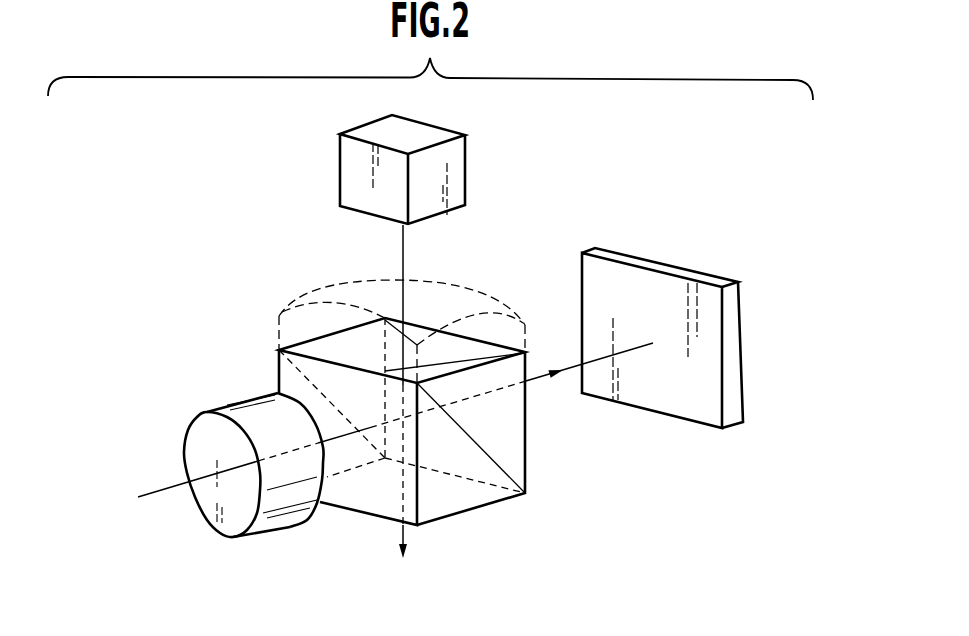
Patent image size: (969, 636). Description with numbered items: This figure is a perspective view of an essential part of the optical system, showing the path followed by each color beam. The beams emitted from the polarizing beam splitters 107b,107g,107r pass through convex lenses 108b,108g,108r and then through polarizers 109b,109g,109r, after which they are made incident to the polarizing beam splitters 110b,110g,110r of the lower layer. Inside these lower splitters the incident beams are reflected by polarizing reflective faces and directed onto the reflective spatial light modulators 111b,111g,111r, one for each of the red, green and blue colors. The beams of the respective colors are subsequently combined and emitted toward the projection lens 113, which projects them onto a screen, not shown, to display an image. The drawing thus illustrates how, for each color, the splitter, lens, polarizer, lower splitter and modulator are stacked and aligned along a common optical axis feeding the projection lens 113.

The polarizing beam splitters 107b,107g,107r is at (467, 164).
The convex lenses 108b,108g,108r is at (361, 291).
The polarizers 109b,109g,109r is at (283, 355).
The polarizing beam splitters of the lower layer 110b,110g,110r is at (465, 493).
The reflective spatial light modulators 111b,111g,111r is at (665, 395).
The projection lens 113 is at (282, 512).